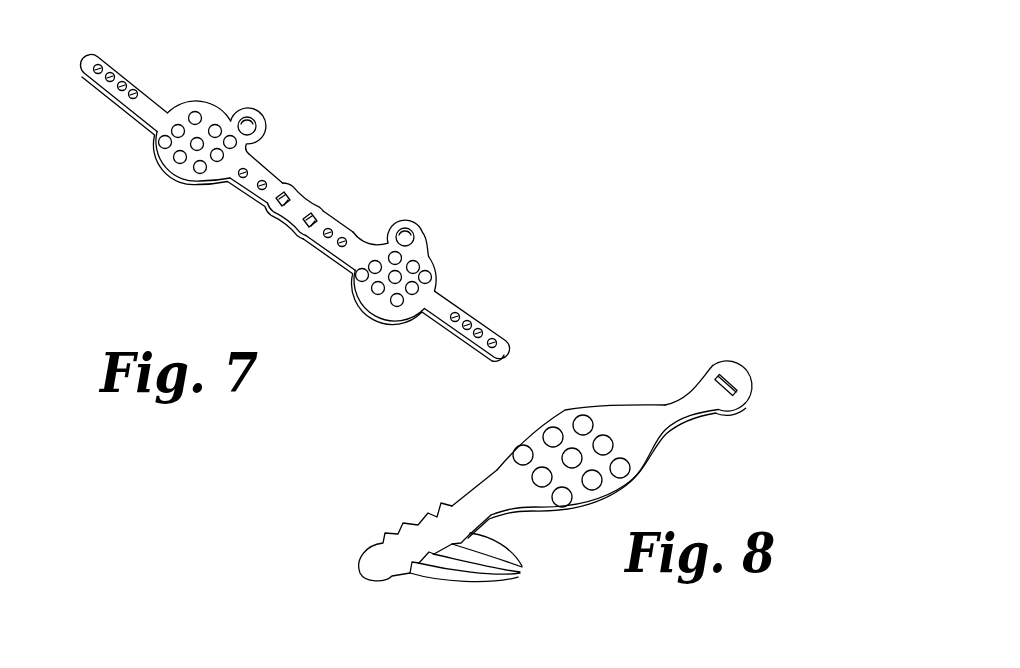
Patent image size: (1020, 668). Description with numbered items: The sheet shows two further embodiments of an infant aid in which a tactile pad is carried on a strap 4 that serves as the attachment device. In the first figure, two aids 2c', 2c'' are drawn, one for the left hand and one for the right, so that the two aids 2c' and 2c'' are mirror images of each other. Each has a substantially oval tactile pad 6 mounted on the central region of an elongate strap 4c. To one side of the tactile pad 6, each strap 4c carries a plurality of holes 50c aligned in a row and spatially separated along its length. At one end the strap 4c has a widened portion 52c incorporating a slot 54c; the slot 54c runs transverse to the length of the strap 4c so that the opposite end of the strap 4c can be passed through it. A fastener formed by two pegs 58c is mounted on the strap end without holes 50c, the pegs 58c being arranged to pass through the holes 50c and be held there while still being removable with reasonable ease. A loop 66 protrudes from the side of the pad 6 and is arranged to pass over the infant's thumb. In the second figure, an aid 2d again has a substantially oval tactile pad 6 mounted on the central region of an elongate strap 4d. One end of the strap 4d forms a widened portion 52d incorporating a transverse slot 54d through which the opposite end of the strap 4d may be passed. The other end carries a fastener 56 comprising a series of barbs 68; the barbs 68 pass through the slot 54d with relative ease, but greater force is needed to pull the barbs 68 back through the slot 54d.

In FIG. 7, the aid 2c' is at (223, 128).
In FIG. 7, the aid 2c'' is at (416, 274).
In FIG. 7, the elongate strap 4c is at (74, 106).
In FIG. 7, the holes 50c is at (133, 91).
In FIG. 7, the tactile pad 6 is at (137, 162).
In FIG. 8, the tactile pad 6 is at (513, 410).
In FIG. 7, the loop 66 is at (257, 121).
In FIG. 7, the strap 4 is at (208, 215).
In FIG. 7, the pegs 58c is at (258, 188).
In FIG. 7, the widened portion 52c is at (275, 240).
In FIG. 7, the slot 54c is at (314, 214).
In FIG. 8, the aid 2d is at (750, 336).
In FIG. 8, the elongate strap 4d is at (648, 373).
In FIG. 8, the widened portion 52d is at (729, 439).
In FIG. 8, the slot 54d is at (735, 382).
In FIG. 8, the fastener 56 is at (398, 547).
In FIG. 8, the barbs 68 is at (512, 571).